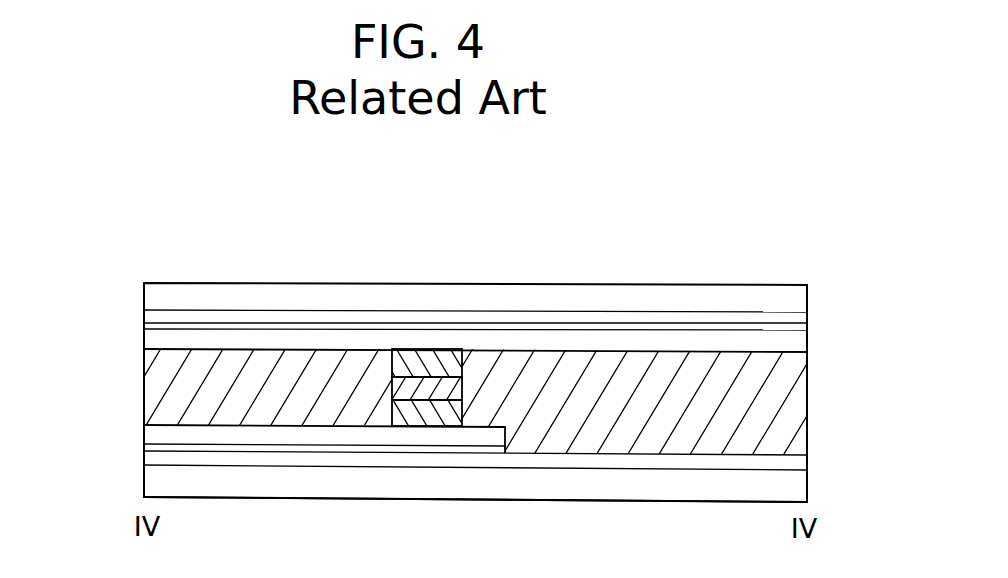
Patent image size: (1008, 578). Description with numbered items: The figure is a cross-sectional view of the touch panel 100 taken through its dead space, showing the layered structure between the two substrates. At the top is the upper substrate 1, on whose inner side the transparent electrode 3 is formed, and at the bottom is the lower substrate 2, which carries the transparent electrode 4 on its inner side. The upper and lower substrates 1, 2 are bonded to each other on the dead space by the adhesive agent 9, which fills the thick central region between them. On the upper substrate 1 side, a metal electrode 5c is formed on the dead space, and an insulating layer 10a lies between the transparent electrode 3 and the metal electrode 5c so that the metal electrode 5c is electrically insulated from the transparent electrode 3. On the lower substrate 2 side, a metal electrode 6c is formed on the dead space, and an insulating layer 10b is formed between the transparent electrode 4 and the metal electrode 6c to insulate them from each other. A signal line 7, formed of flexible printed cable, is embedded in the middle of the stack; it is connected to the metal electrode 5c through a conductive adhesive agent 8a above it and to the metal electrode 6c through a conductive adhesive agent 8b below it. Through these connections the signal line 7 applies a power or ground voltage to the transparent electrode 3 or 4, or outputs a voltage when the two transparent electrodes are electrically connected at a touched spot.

The touch panel 100 is at (612, 280).
The upper substrate 1 is at (798, 298).
The transparent electrode 3 is at (798, 320).
The insulating layer 10a is at (155, 327).
The metal electrode 5c is at (790, 345).
The adhesive agent 9 is at (797, 402).
The conductive adhesive agent 8a is at (450, 360).
The signal line 7 is at (410, 383).
The conductive adhesive agent 8b is at (437, 417).
The metal electrode 6c is at (153, 435).
The insulating layer 10b is at (155, 448).
The transparent electrode 4 is at (795, 462).
The lower substrate 2 is at (795, 483).